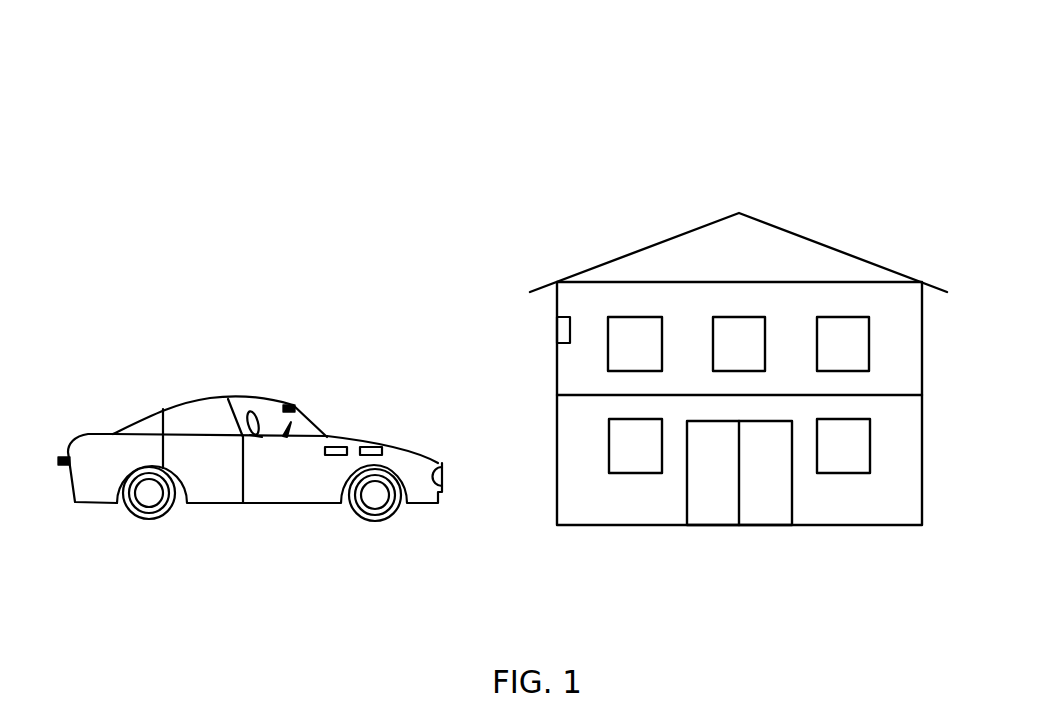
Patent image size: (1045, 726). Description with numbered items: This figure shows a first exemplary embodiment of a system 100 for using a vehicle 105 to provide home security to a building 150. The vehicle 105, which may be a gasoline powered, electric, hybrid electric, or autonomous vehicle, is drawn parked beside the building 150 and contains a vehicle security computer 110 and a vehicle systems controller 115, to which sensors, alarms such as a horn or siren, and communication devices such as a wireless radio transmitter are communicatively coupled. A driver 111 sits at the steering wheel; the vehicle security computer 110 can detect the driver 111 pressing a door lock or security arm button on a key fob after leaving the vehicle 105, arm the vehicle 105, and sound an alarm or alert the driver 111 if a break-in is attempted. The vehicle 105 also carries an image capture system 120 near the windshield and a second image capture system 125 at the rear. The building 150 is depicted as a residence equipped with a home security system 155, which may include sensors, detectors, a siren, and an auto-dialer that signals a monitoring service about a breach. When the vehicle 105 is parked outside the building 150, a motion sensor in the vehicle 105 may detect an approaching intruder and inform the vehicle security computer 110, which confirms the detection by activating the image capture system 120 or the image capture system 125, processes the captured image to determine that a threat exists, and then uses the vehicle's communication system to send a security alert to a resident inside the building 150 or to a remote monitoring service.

The system 100 is at (136, 137).
The vehicle 105 is at (119, 369).
The vehicle security computer 110 is at (336, 445).
The driver 111 is at (262, 406).
The vehicle systems controller 115 is at (376, 445).
The image capture system 120 is at (291, 403).
The image capture system 125 is at (63, 456).
The building 150 is at (553, 232).
The home security system 155 is at (563, 316).